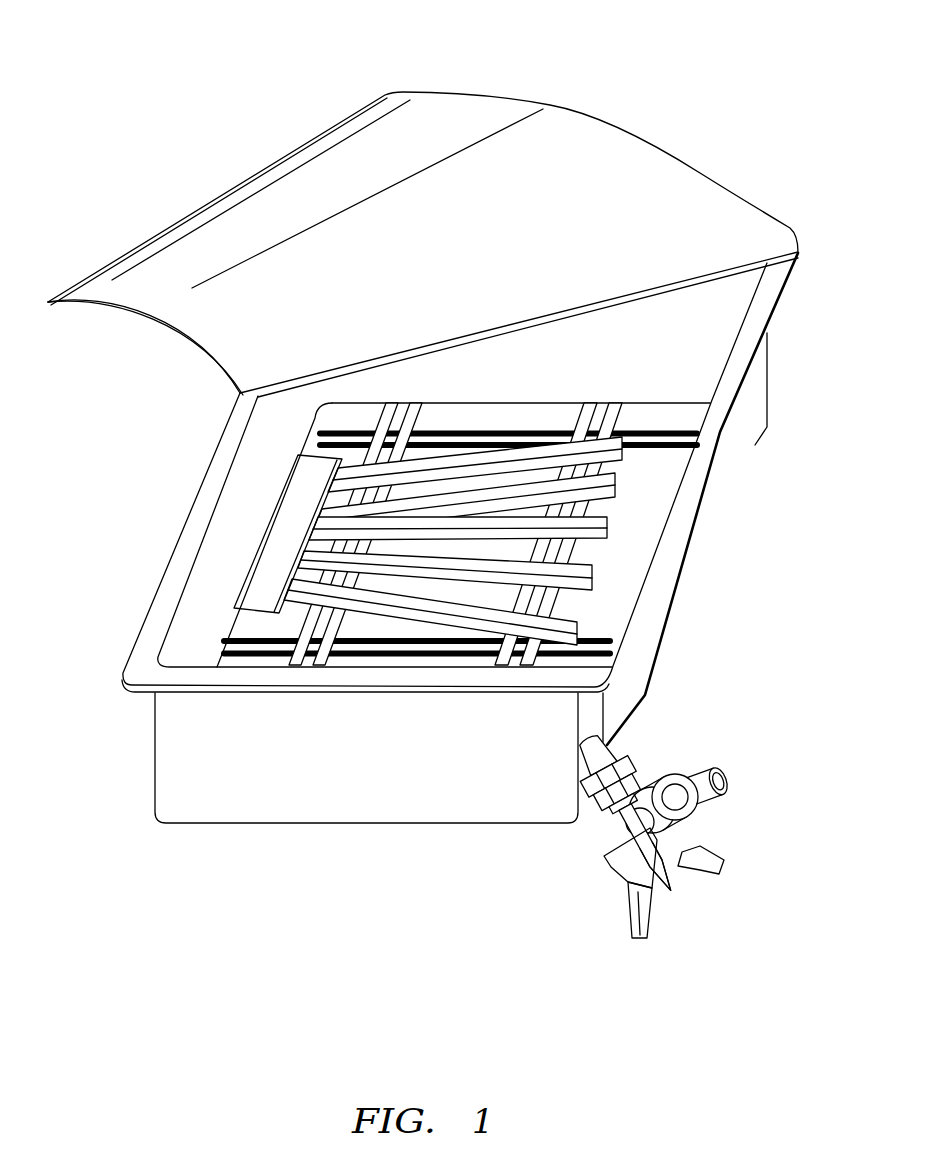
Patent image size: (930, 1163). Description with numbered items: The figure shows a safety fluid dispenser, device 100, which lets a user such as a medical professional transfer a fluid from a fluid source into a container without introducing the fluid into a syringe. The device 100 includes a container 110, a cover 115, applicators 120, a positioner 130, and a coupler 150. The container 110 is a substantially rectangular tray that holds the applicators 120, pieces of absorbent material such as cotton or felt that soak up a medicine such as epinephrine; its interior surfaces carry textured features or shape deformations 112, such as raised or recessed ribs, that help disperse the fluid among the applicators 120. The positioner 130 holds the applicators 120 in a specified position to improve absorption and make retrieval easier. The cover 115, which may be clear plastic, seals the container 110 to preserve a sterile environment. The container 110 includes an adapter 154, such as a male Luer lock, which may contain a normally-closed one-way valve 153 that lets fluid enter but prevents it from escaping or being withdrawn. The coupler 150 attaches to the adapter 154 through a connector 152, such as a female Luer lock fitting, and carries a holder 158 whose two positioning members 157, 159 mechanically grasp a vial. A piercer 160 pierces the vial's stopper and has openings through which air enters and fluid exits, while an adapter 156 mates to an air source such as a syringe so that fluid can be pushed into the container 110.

The device 100 is at (137, 106).
The container 110 is at (200, 823).
The textured features or shape deformations 112 is at (313, 629).
The cover 115 is at (137, 247).
The applicators 120 is at (307, 585).
The positioner 130 is at (310, 470).
The coupler 150 is at (618, 835).
The connector 152 is at (633, 760).
The one-way valve 153 is at (608, 805).
The adapter 154 is at (606, 745).
The adapter 156 is at (732, 778).
The positioning member 157 is at (635, 940).
The holder 158 is at (618, 882).
The positioning member 159 is at (722, 872).
The piercer 160 is at (672, 892).